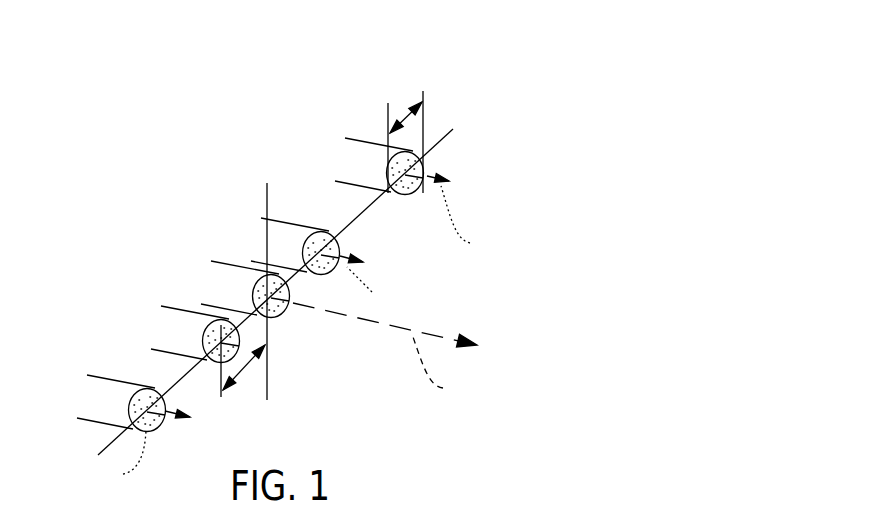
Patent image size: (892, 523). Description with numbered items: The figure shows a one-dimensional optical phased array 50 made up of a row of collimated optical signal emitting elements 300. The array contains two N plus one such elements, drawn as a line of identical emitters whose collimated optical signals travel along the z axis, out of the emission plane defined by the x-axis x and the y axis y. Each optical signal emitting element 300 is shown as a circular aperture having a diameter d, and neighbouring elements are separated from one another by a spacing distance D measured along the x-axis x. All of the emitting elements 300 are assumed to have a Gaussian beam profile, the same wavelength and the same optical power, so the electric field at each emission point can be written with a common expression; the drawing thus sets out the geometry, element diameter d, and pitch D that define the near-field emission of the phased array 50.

The one-dimensional optical phased array 50 is at (455, 78).
The collimated optical signal emitting element 300 is at (340, 157).
The spacing distance D is at (243, 363).
The element diameter d is at (405, 140).
The x-axis x is at (284, 282).
The y axis y is at (267, 272).